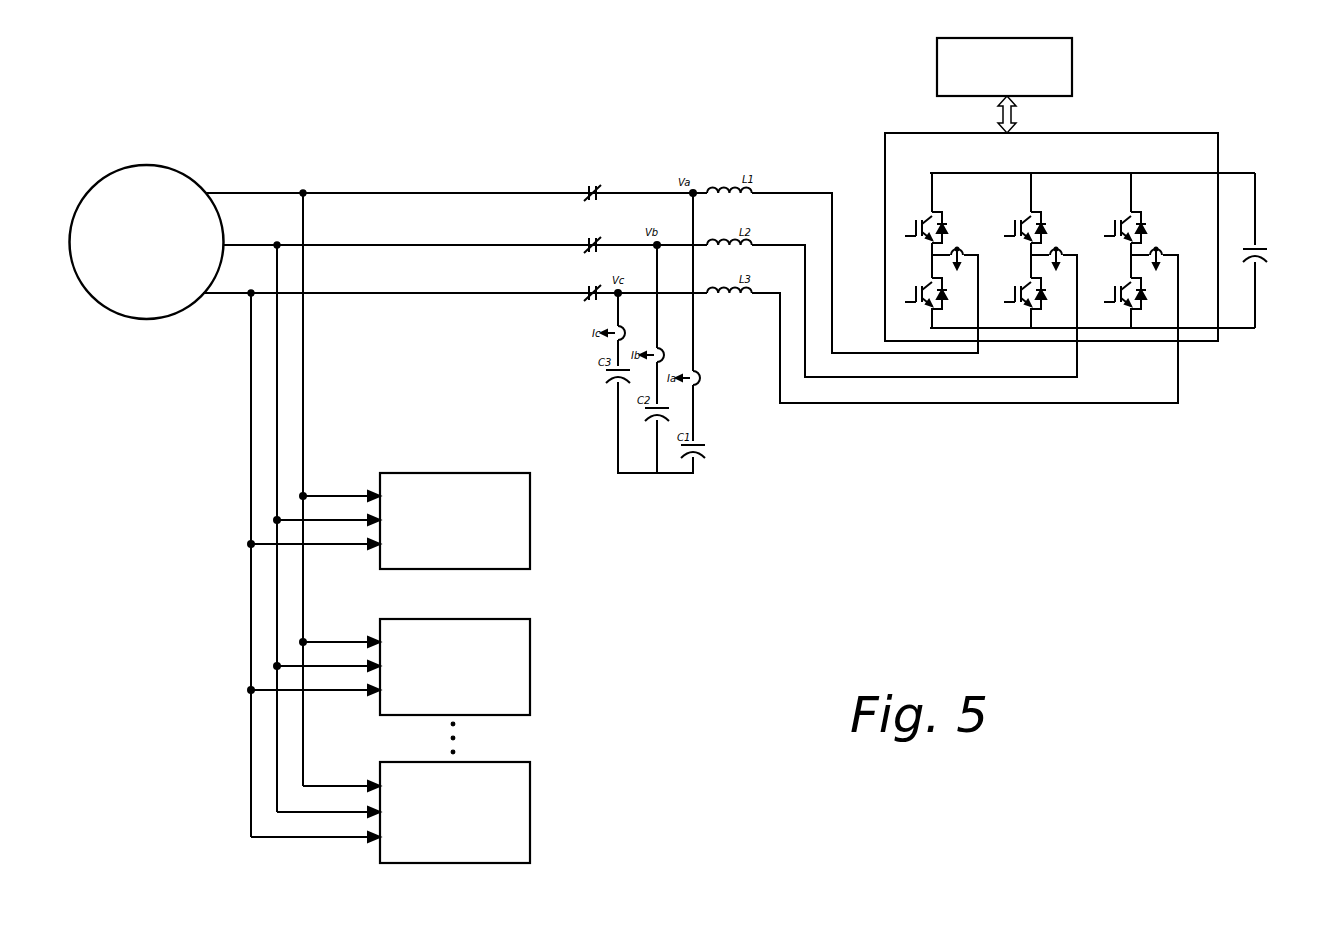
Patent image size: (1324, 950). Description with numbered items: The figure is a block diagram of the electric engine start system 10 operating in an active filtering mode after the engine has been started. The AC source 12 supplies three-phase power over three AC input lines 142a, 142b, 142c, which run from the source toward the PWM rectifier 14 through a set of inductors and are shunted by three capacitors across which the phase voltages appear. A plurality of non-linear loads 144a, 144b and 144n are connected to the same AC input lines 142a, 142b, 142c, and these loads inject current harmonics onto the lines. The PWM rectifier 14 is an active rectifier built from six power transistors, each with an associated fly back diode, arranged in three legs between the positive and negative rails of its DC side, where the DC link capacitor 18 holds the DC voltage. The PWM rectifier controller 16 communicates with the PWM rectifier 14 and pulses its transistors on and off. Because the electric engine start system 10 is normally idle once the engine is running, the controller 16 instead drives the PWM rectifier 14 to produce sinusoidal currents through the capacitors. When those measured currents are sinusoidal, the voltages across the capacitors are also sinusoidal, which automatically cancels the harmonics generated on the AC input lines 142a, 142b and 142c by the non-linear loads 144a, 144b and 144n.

The electric engine start system 10 is at (219, 113).
The AC source 12 is at (141, 166).
The PWM rectifier 14 is at (1114, 133).
The PWM rectifier controller 16 is at (937, 73).
The DC link capacitor 18 is at (1265, 250).
The AC input line 142a is at (318, 476).
The AC input line 142b is at (465, 512).
The AC input line 142c is at (455, 551).
The non-linear load 144a is at (424, 480).
The non-linear load 144b is at (412, 619).
The non-linear load 144n is at (466, 762).